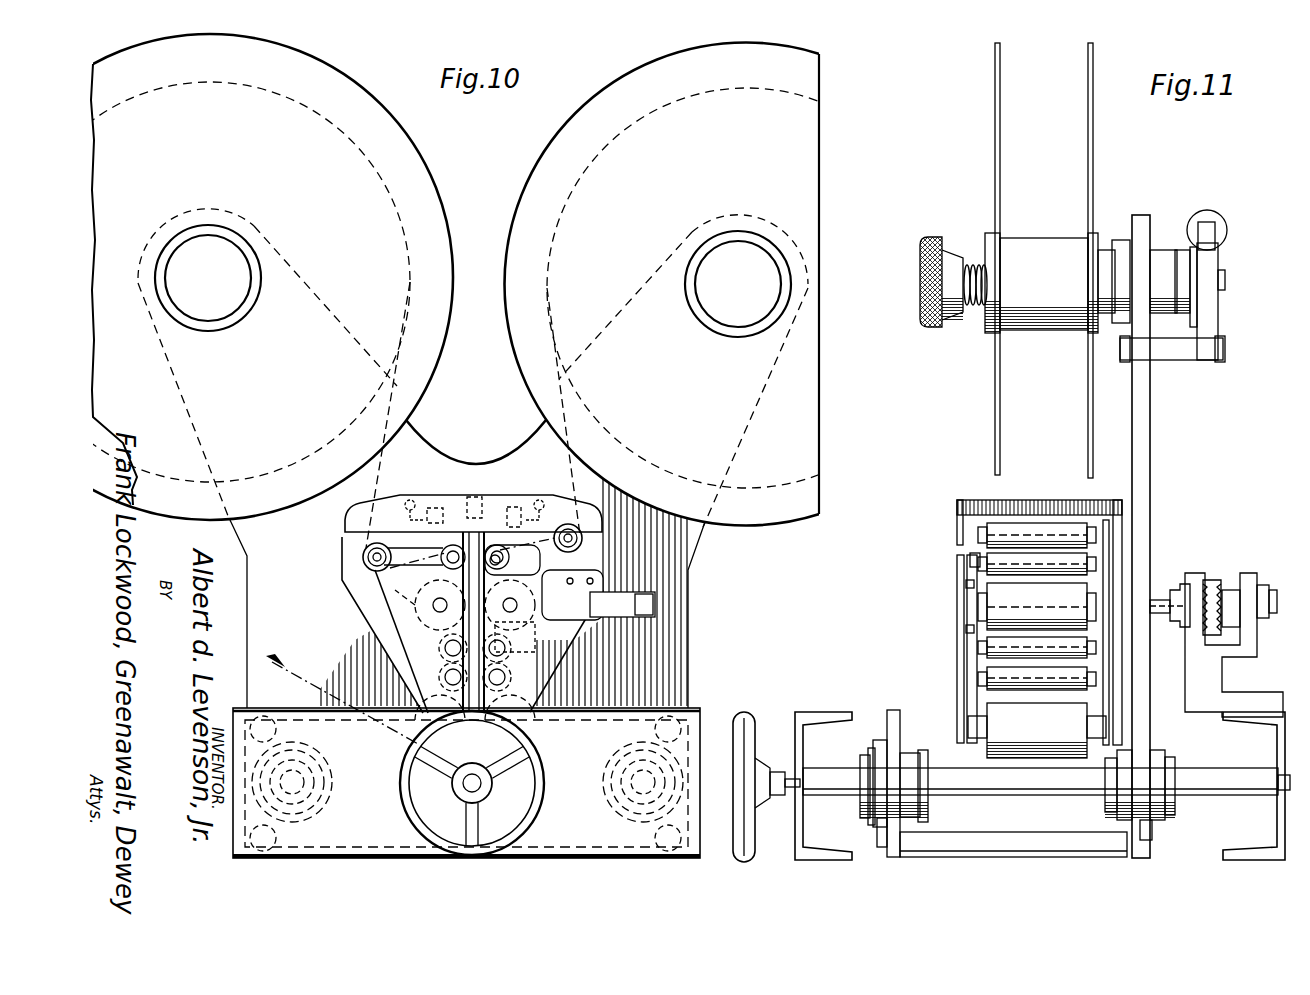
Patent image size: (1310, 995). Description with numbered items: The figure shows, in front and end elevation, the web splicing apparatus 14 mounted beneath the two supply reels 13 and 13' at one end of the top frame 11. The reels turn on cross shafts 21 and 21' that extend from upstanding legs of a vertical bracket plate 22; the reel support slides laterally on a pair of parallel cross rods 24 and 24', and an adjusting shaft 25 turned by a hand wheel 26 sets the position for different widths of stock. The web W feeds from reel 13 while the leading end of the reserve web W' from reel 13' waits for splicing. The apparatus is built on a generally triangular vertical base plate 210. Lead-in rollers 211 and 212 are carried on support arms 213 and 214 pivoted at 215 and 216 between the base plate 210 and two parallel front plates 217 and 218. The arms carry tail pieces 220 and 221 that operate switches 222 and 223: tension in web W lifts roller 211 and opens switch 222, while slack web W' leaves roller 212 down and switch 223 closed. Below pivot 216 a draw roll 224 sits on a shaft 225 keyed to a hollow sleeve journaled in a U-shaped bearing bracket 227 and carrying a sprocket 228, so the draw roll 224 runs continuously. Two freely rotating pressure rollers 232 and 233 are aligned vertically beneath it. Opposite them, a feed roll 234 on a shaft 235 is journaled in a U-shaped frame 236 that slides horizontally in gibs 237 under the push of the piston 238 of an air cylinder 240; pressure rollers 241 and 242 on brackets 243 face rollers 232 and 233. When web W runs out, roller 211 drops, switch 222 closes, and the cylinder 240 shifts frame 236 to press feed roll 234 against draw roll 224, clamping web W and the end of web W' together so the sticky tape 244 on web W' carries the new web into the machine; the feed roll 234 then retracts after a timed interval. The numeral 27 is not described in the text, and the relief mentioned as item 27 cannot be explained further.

In FIG. 10, the top frame 11 is at (691, 710).
In FIG. 11, the top frame 11 is at (816, 716).
In FIG. 10, the supply reel 13 is at (746, 284).
In FIG. 11, the supply reel 13 is at (1021, 260).
In FIG. 10, the supply reel 13' is at (231, 277).
In FIG. 10, the web splicing apparatus 14 is at (338, 534).
In FIG. 10, the cross shaft 21 is at (683, 349).
In FIG. 11, the cross shaft 21 is at (1073, 286).
In FIG. 10, the cross shaft 21' is at (267, 345).
In FIG. 10, the bracket plate 22 is at (689, 561).
In FIG. 11, the bracket plate 22 is at (1150, 504).
In FIG. 10, the cross rod 24 is at (313, 782).
In FIG. 10, the cross rod 24' is at (623, 782).
In FIG. 11, the cross rod 24' is at (1046, 783).
In FIG. 10, the adjusting shaft 25 is at (465, 792).
In FIG. 11, the adjusting shaft 25 is at (790, 800).
In FIG. 10, the hand wheel 26 is at (544, 771).
In FIG. 11, the hand wheel 26 is at (752, 720).
In FIG. 11, the roller housing plate 27 is at (957, 651).
In FIG. 10, the web W is at (580, 411).
In FIG. 10, the reserve web W' is at (388, 415).
In FIG. 10, the base plate 210 is at (582, 540).
In FIG. 10, the lead-in roller 211 is at (600, 497).
In FIG. 11, the lead-in roller 211 is at (1017, 534).
In FIG. 10, the lead-in roller 212 is at (370, 548).
In FIG. 10, the support arm 213 is at (556, 572).
In FIG. 11, the support arm 213 is at (1093, 549).
In FIG. 10, the support arm 214 is at (342, 590).
In FIG. 10, the pivot 215 is at (512, 562).
In FIG. 11, the pivot 215 is at (970, 558).
In FIG. 10, the pivot 216 is at (380, 595).
In FIG. 10, the front plate 217 is at (560, 668).
In FIG. 10, the front plate 218 is at (400, 652).
In FIG. 10, the tail piece 220 is at (494, 520).
In FIG. 10, the tail piece 221 is at (450, 520).
In FIG. 10, the switch 222 is at (522, 500).
In FIG. 10, the switch 223 is at (420, 512).
In FIG. 10, the draw roll 224 is at (400, 627).
In FIG. 10, the shaft 225 is at (400, 600).
In FIG. 11, the bearing bracket 227 is at (1222, 676).
In FIG. 11, the sprocket 228 is at (1214, 578).
In FIG. 10, the pressure roller 232 is at (410, 664).
In FIG. 10, the pressure roller 233 is at (410, 685).
In FIG. 10, the feed roll 234 is at (556, 650).
In FIG. 11, the feed roll 234 is at (1073, 588).
In FIG. 10, the shaft 235 is at (608, 600).
In FIG. 11, the supporting frame 236 is at (975, 604).
In FIG. 10, the gib 237 is at (520, 507).
In FIG. 11, the gib 237 is at (966, 584).
In FIG. 10, the piston 238 is at (604, 580).
In FIG. 10, the air cylinder 240 is at (632, 596).
In FIG. 10, the pressure roller 241 is at (548, 682).
In FIG. 11, the pressure roller 241 is at (1088, 648).
In FIG. 10, the pressure roller 242 is at (540, 700).
In FIG. 11, the pressure roller 242 is at (1090, 676).
In FIG. 10, the bracket 243 is at (525, 716).
In FIG. 11, the bracket 243 is at (1096, 694).
In FIG. 10, the sticky tape 244 is at (445, 648).